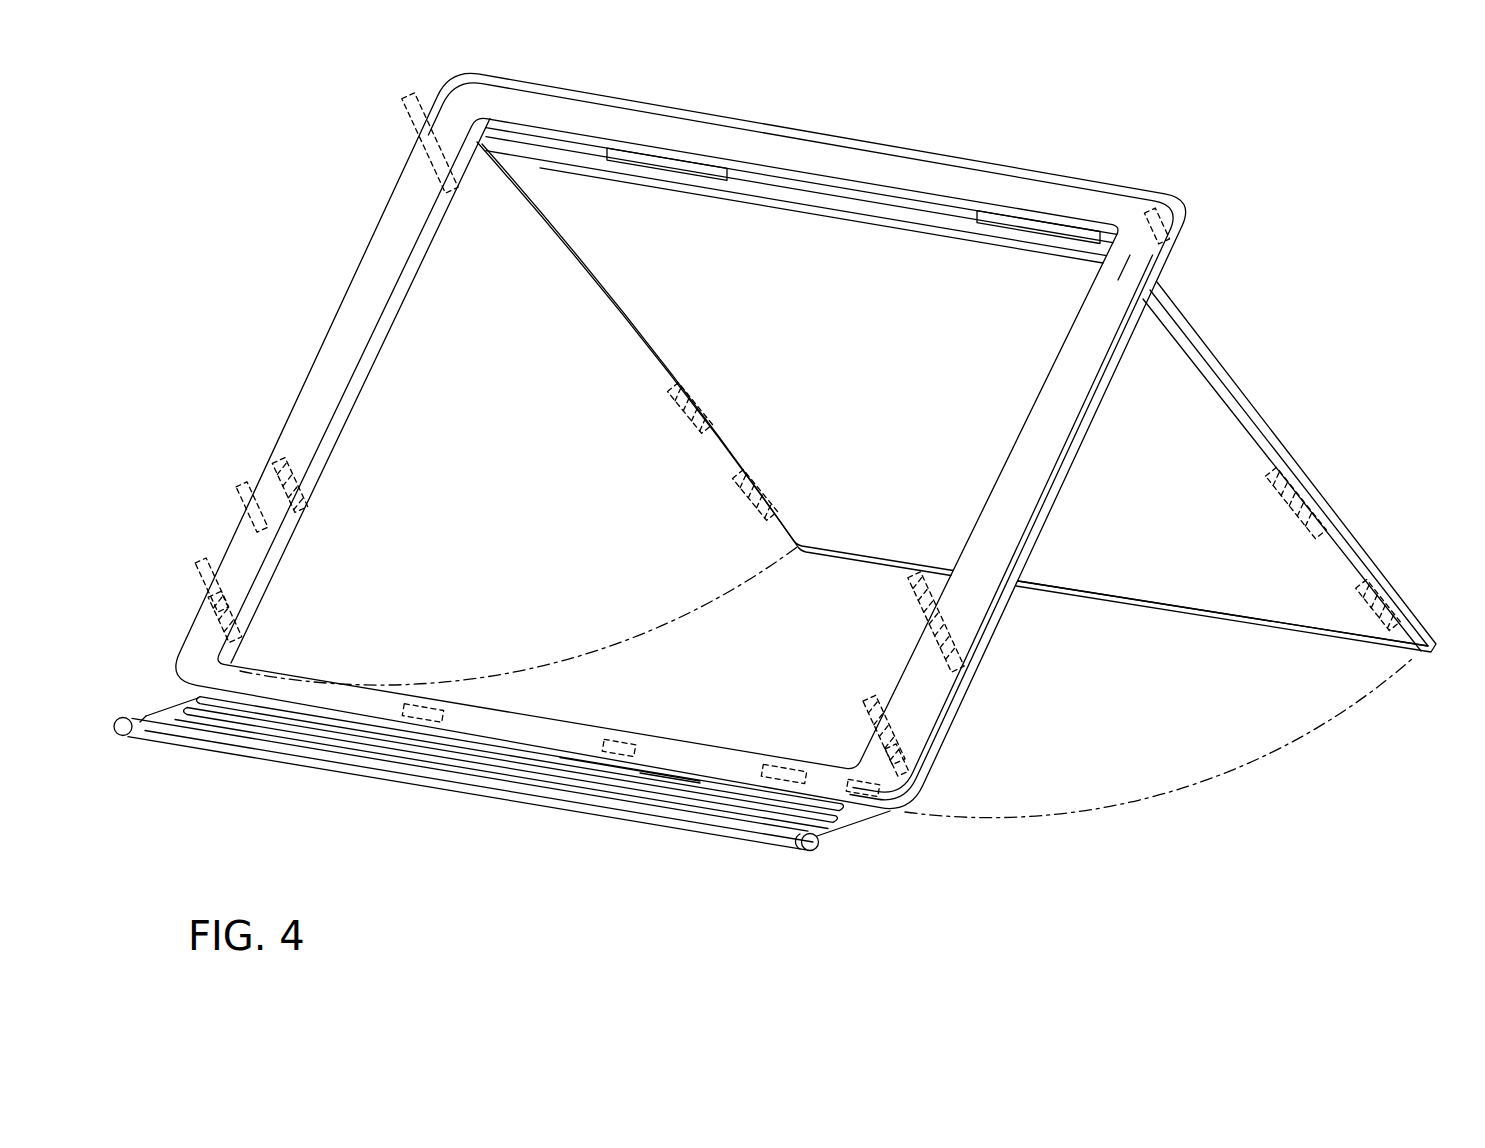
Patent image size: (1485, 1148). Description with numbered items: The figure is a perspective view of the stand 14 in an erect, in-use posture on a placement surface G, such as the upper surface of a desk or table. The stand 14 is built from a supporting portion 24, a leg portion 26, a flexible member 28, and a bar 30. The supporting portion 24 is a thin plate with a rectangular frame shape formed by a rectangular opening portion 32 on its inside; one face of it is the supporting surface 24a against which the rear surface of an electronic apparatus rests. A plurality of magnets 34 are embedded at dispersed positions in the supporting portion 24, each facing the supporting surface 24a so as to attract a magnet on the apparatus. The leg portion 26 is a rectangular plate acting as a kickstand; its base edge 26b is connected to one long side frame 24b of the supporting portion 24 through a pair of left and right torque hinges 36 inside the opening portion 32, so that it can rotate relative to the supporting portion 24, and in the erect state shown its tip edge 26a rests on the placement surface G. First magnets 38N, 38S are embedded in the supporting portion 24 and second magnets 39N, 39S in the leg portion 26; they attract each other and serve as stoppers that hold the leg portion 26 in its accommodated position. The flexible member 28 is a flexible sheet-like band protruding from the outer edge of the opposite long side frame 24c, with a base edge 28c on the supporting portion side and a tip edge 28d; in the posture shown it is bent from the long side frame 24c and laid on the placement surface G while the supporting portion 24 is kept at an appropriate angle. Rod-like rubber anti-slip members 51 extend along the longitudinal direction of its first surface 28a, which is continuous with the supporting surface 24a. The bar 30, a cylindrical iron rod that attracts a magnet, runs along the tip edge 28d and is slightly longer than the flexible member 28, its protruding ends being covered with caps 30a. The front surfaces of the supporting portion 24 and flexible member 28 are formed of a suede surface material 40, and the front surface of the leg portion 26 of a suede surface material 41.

The stand 14 is at (242, 86).
The supporting portion 24 is at (1102, 185).
The supporting surface 24a is at (932, 175).
The long side frame 24b is at (834, 157).
The long side frame 24c is at (530, 722).
The leg portion 26 is at (1287, 432).
The tip edge 26a is at (1068, 600).
The base edge 26b is at (727, 185).
The flexible member 28 is at (470, 770).
The first surface 28a is at (152, 735).
The base edge 28c is at (575, 758).
The tip edge 28d is at (580, 780).
The bar 30 is at (372, 770).
The cap 30a is at (120, 717).
The opening portion 32 is at (740, 750).
The magnet 34 is at (420, 135).
The torque hinge 36 is at (607, 150).
The first magnet 38N is at (300, 478).
The first magnet 38S is at (240, 598).
The second magnet 39N is at (745, 470).
The second magnet 39S is at (680, 395).
The surface material 40 is at (1012, 505).
The surface material 41 is at (1165, 375).
The anti-slip member 51 is at (668, 772).
The placement surface G is at (1225, 738).